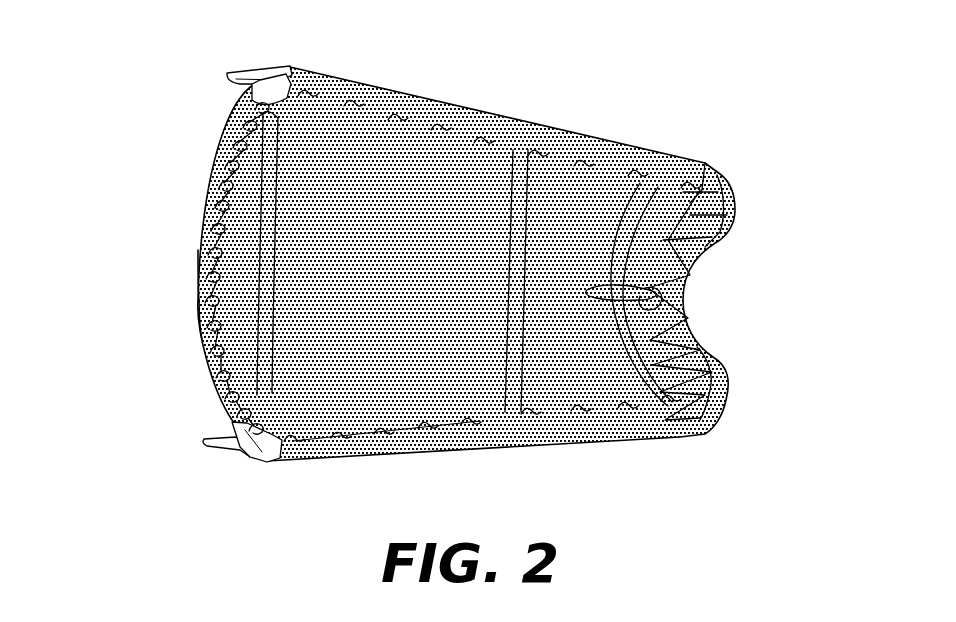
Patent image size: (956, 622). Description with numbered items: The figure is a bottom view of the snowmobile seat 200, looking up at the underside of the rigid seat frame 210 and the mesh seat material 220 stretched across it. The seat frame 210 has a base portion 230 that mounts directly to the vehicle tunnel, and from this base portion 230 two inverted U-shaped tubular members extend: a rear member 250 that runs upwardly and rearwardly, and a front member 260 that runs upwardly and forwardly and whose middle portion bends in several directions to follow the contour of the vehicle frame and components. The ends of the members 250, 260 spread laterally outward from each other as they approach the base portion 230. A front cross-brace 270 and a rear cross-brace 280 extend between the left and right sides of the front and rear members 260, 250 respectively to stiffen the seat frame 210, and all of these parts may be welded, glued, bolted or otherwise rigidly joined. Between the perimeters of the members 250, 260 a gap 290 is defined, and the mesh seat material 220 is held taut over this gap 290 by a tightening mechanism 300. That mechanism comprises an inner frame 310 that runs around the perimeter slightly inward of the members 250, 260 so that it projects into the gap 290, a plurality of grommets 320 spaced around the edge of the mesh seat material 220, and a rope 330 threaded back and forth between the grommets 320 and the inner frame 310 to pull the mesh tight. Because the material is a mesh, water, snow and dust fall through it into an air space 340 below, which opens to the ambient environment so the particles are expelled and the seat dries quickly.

The seat 200 is at (431, 276).
The rigid seat frame 210 is at (253, 452).
The mesh seat material 220 is at (466, 301).
The base portion 230 is at (262, 70).
The rear inverted U-shaped tubular member 250 is at (197, 268).
The front inverted U-shaped tubular member 260 is at (670, 170).
The front cross-brace 270 is at (517, 177).
The rear cross-brace 280 is at (266, 197).
The gap 290 is at (370, 231).
The tightening mechanism 300 is at (207, 337).
The inner frame 310 is at (197, 294).
The grommets 320 is at (216, 232).
The rope 330 is at (663, 312).
The air space 340 is at (370, 321).